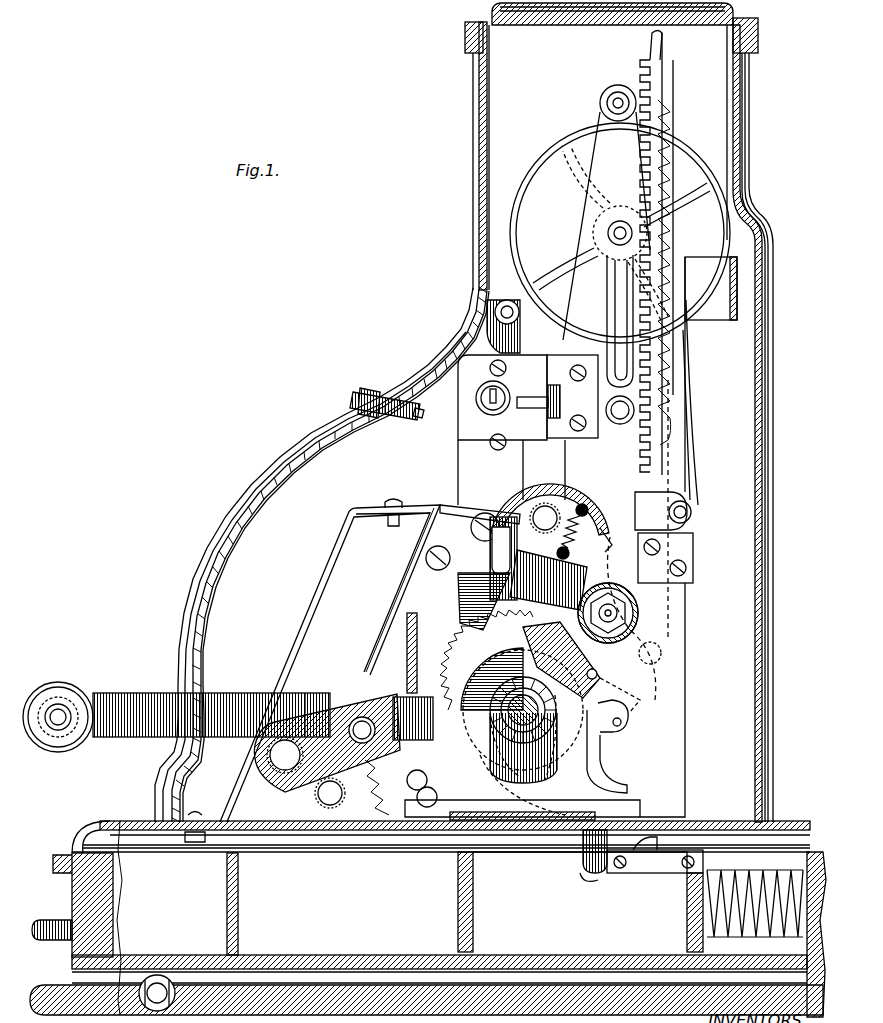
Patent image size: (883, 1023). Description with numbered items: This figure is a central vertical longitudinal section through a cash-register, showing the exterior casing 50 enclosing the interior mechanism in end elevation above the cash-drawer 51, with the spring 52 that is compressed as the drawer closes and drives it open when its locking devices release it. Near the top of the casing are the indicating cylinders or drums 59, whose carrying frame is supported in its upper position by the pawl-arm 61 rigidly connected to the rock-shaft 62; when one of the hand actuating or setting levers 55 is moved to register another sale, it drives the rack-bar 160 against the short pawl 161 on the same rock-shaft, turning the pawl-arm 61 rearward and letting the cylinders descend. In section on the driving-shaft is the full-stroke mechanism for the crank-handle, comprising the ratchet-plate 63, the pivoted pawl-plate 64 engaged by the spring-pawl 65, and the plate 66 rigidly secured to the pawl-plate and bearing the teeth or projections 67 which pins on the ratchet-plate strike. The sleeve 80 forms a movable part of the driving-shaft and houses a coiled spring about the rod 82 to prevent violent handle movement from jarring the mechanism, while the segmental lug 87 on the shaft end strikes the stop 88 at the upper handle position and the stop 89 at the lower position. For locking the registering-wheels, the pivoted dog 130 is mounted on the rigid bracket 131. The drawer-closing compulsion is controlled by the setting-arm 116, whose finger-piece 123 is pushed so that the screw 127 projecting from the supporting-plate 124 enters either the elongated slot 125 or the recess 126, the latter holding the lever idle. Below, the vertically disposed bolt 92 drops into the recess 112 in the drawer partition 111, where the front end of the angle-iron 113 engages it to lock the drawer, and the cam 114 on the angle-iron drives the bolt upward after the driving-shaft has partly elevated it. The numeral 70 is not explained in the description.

The exterior casing 50 is at (479, 412).
The cash-drawer 51 is at (428, 919).
The spring 52 is at (755, 893).
The hand actuating or setting levers 55 is at (133, 693).
The indicating cylinders or drums 59 is at (620, 233).
The pawl-arm 61 is at (693, 445).
The rock-shaft 62 is at (692, 510).
The ratchet-plate 63 is at (636, 703).
The pivoted pawl-plate 64 is at (640, 617).
The spring-pawl 65 is at (570, 493).
The plate 66 is at (600, 682).
The teeth or projections 67 is at (562, 688).
The lever 70 is at (610, 537).
The sleeve 80 is at (522, 755).
The rod 82 is at (520, 718).
The segmental lug 87 is at (486, 660).
The stop 88 is at (582, 758).
The stop 89 is at (508, 710).
The bolt 92 is at (582, 838).
The partition 111 is at (495, 856).
The recess 112 is at (583, 870).
The angle-iron 113 is at (655, 861).
The cam 114 is at (658, 838).
The setting-arm 116 is at (462, 611).
The finger-piece 123 is at (438, 503).
The supporting-plate 124 is at (407, 620).
The elongated slot 125 is at (516, 536).
The recess 126 is at (403, 555).
The screw 127 is at (487, 517).
The pivoted dog 130 is at (403, 662).
The rigid bracket 131 is at (397, 582).
The rack-bar 160 is at (676, 393).
The short pawl 161 is at (700, 487).